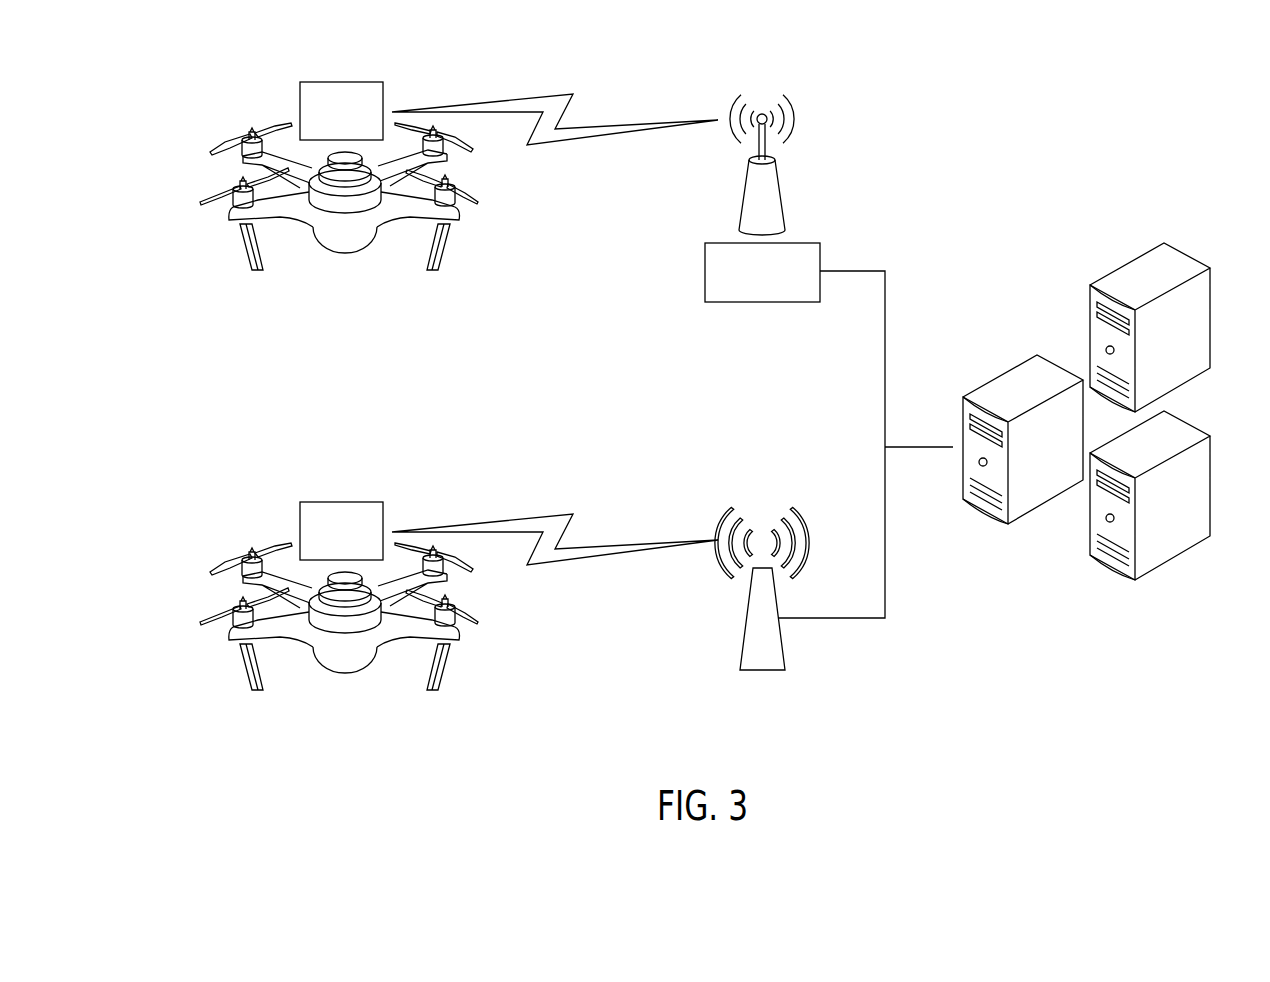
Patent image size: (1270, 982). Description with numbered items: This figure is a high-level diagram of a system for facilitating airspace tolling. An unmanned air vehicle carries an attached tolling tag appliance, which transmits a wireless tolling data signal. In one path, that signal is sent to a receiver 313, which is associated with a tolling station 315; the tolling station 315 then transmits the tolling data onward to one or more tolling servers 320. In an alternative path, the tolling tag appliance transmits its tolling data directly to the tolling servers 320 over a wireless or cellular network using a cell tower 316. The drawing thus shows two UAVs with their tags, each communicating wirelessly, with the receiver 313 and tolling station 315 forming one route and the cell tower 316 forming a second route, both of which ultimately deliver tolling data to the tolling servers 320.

The receiver 313 is at (783, 190).
The tolling station 315 is at (762, 302).
The cell tower 316 is at (779, 651).
The tolling server 320 is at (1000, 374).